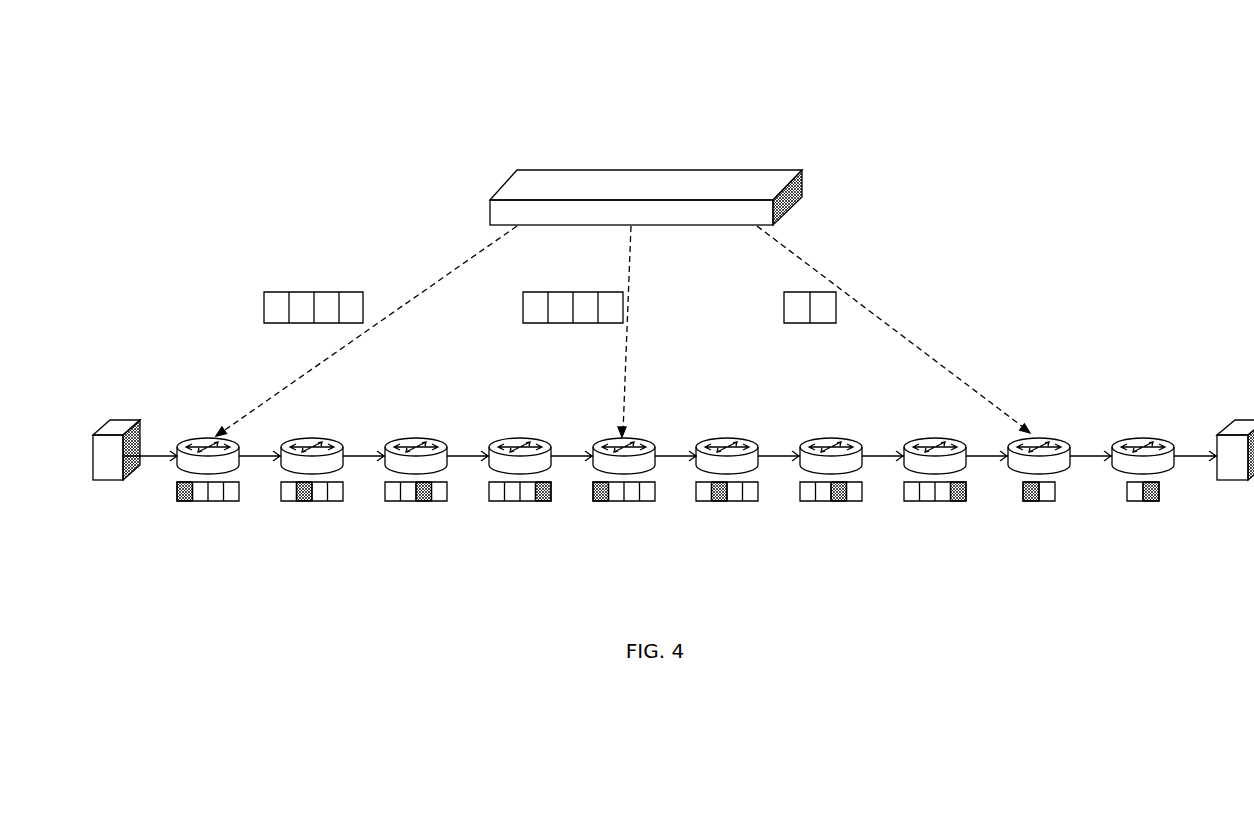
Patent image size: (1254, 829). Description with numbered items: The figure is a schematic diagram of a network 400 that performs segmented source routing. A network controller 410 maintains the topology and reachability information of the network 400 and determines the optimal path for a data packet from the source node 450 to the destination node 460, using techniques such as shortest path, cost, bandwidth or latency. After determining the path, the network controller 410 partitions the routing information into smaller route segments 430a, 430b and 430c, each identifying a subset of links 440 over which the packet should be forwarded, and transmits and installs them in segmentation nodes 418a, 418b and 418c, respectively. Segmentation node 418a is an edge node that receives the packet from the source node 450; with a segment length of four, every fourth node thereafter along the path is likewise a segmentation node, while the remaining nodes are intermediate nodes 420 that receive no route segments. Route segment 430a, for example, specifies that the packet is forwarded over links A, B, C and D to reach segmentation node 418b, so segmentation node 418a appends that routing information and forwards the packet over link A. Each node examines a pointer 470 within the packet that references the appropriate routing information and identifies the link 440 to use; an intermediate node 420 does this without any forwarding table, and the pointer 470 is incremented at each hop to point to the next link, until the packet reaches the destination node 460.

The network 400 is at (159, 89).
The network controller 410 is at (677, 170).
The segmentation node 418a is at (197, 437).
The segmentation node 418b is at (612, 437).
The segmentation node 418c is at (1052, 437).
The intermediate node 420 is at (309, 437).
The route segment 430a is at (312, 292).
The route segment 430b is at (573, 292).
The route segment 430c is at (810, 324).
The link 440 is at (256, 462).
The source node 450 is at (110, 482).
The destination node 460 is at (1237, 482).
The pointer 470 is at (208, 501).